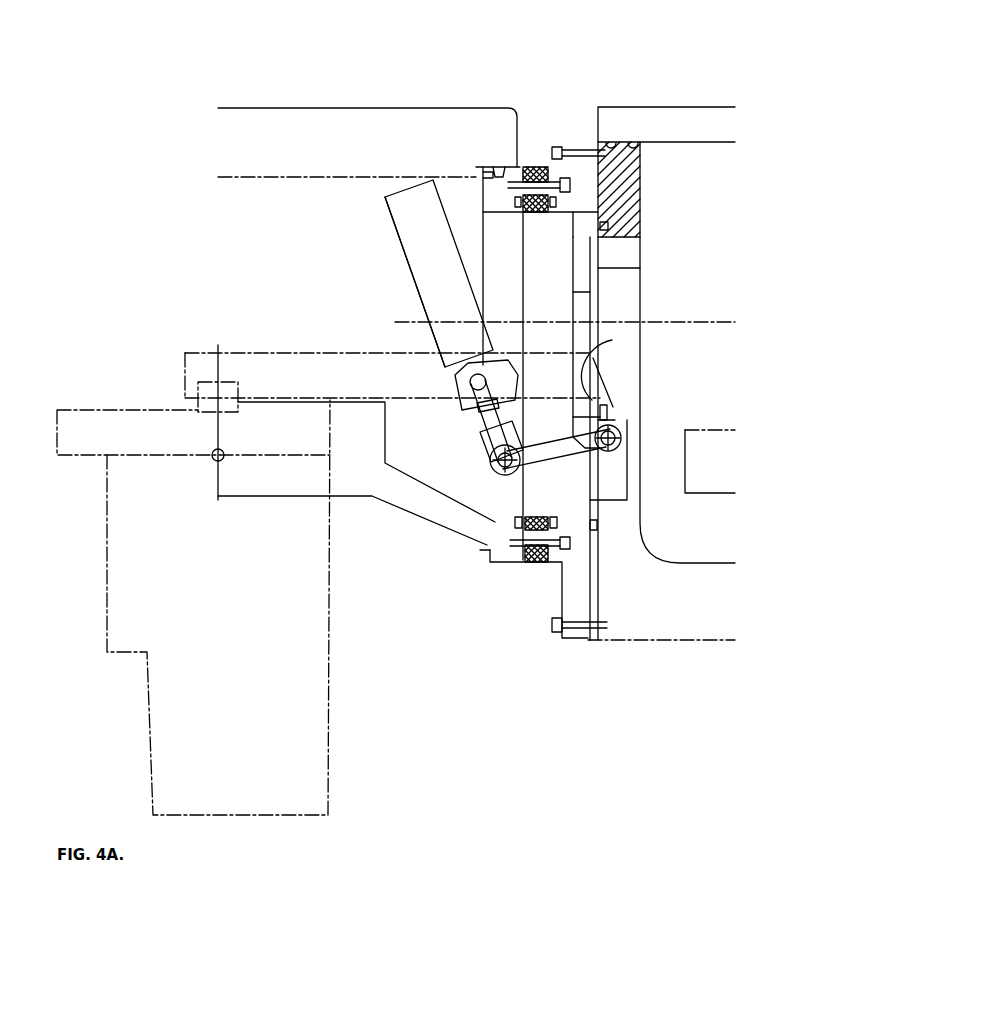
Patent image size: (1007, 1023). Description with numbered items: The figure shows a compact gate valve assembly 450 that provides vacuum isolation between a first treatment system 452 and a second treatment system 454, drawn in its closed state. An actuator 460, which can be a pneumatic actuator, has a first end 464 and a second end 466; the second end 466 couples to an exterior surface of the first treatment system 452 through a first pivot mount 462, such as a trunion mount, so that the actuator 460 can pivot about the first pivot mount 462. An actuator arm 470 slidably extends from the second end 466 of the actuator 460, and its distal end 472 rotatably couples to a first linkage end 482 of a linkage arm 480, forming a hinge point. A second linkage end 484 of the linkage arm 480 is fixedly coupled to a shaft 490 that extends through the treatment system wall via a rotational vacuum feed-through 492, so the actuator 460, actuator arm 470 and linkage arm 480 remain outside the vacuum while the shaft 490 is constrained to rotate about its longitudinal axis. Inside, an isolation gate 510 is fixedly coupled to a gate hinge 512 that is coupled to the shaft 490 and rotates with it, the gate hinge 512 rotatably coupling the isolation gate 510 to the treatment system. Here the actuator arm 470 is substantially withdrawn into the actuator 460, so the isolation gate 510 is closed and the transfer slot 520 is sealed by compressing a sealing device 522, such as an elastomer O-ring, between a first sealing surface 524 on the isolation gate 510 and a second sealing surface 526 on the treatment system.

The gate valve assembly 450 is at (412, 655).
The first treatment system 452 is at (373, 108).
The second treatment system 454 is at (688, 108).
The actuator 460 is at (413, 235).
The first pivot mount 462 is at (473, 385).
The first end 464 is at (410, 192).
The second end 466 is at (475, 410).
The actuator arm 470 is at (478, 437).
The distal end 472 is at (505, 467).
The linkage arm 480 is at (558, 462).
The first linkage end 482 is at (522, 470).
The second linkage end 484 is at (627, 447).
The shaft 490 is at (615, 437).
The vacuum feed-through 492 is at (620, 442).
The isolation gate 510 is at (600, 268).
The gate hinge 512 is at (600, 440).
The transfer slot 520 is at (632, 250).
The sealing device 522 is at (605, 225).
The first sealing surface 524 is at (600, 292).
The second sealing surface 526 is at (612, 340).